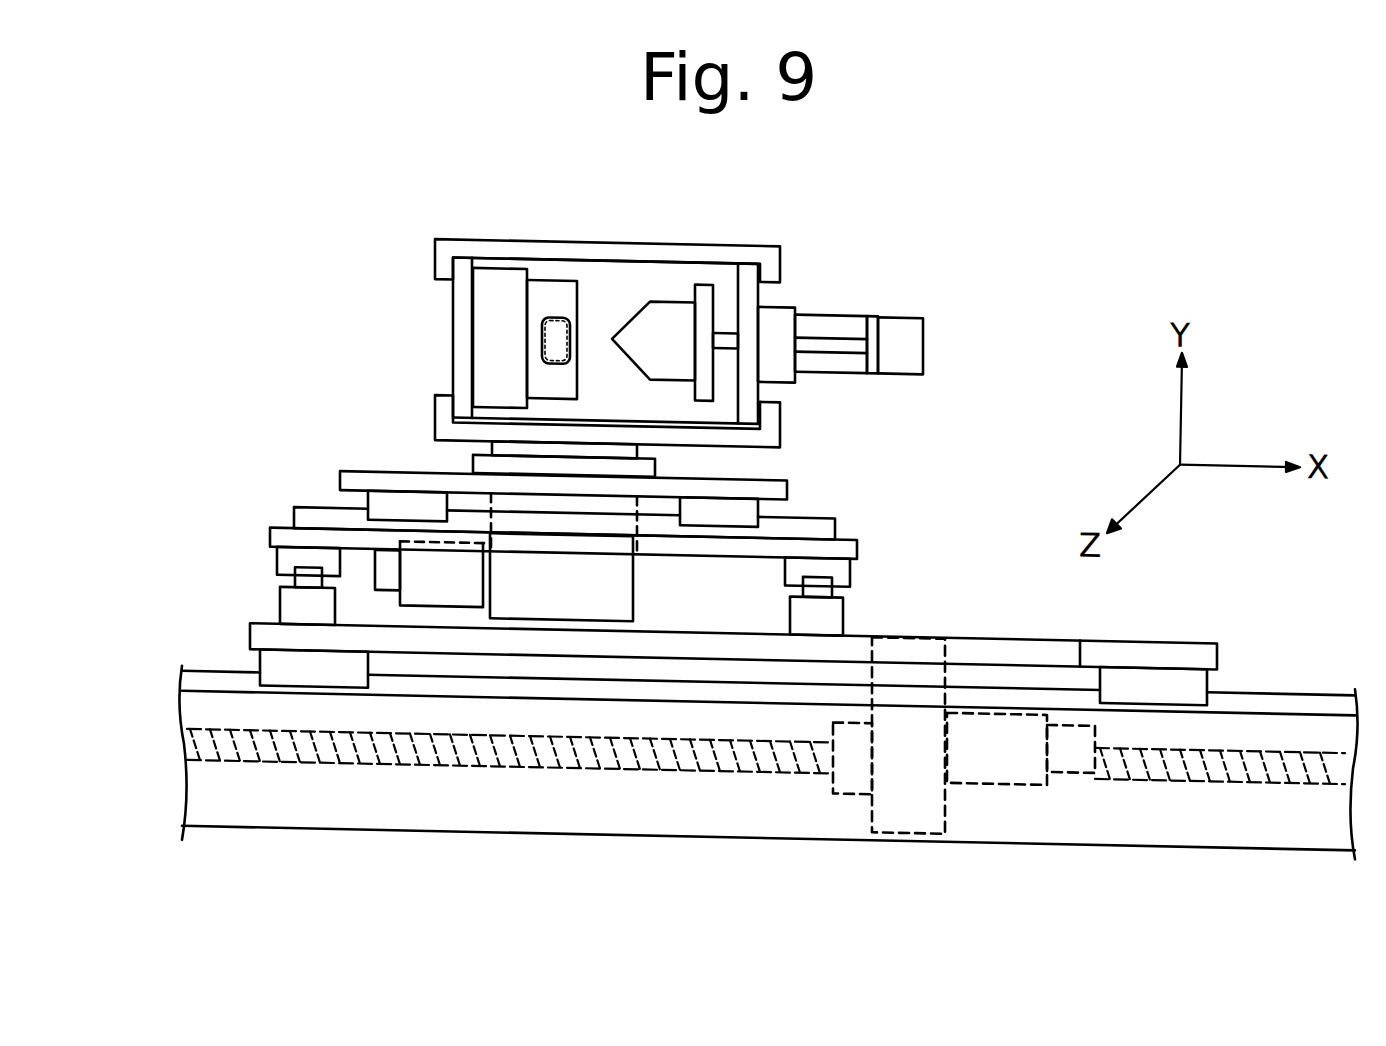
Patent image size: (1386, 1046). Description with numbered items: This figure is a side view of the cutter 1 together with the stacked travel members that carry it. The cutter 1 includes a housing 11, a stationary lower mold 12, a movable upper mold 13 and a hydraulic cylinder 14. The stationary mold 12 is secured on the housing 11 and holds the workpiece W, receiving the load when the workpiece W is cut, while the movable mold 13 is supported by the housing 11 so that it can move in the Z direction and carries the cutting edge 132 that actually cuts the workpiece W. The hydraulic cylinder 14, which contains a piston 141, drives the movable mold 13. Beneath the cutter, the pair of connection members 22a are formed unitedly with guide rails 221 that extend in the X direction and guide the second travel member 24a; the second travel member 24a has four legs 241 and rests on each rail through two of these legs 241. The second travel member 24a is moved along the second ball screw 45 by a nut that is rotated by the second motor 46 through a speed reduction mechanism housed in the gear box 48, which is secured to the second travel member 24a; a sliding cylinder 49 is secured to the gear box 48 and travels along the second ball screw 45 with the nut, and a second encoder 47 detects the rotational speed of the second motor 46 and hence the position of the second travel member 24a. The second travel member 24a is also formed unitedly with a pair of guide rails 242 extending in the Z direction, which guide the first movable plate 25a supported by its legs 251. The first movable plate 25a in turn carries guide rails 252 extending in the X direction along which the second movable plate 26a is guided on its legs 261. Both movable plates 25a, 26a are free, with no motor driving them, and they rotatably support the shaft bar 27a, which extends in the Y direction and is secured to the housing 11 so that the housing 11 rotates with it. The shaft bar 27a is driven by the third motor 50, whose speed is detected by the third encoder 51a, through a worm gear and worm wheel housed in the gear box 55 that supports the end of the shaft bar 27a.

The cutter 1 is at (768, 232).
The housing 11 is at (487, 233).
The stationary lower mold 12 is at (513, 271).
The workpiece W is at (565, 303).
The cutting edge 132 is at (662, 298).
The movable upper mold 13 is at (704, 285).
The hydraulic cylinder 14 is at (837, 314).
The piston 141 is at (873, 304).
The shaft bar 27a is at (520, 427).
The second movable plate 26a is at (752, 474).
The legs 261 is at (387, 487).
The guide rails 252 is at (820, 508).
The first movable plate 25a is at (837, 529).
The legs 251 is at (285, 550).
The guide rails 242 is at (300, 572).
The legs 241 is at (268, 654).
The second travel member 24a is at (867, 622).
The guide rails 221 is at (210, 674).
The connection members 22a is at (1290, 698).
The second ball screw 45 is at (620, 747).
The gear box 55 is at (565, 590).
The third motor 50 is at (445, 549).
The third encoder 51a is at (383, 554).
The sliding cylinder 49 is at (848, 777).
The gear box 48 is at (907, 806).
The second motor 46 is at (1002, 757).
The second encoder 47 is at (1070, 745).